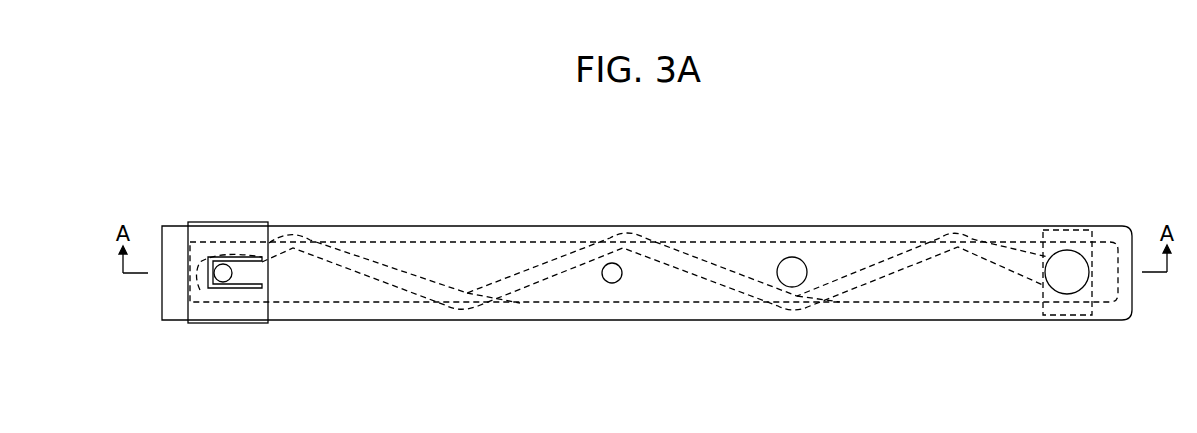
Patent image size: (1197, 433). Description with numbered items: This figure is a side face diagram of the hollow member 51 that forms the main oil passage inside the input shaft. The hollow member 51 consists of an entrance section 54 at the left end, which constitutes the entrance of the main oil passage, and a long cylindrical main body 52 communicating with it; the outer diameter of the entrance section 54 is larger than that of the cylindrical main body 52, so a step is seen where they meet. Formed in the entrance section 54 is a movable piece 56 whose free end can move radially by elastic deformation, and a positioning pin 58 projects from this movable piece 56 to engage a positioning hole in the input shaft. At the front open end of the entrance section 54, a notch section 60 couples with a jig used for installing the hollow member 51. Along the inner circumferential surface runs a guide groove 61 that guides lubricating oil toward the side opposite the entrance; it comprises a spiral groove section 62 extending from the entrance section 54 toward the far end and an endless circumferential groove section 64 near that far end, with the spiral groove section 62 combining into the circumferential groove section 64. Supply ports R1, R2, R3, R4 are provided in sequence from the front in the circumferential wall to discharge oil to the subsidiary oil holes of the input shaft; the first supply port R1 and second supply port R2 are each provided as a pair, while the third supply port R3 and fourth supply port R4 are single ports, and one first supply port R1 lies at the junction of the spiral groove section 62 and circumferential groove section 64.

The hollow member 51 is at (987, 188).
The cylindrical main body 52 is at (878, 225).
The entrance section 54 is at (230, 222).
The movable piece 56 is at (249, 264).
The positioning pin 58 is at (225, 278).
The notch section 60 is at (190, 241).
The guide groove 61 is at (512, 264).
The spiral groove section 62 is at (743, 264).
The circumferential groove section 64 is at (1067, 249).
The first supply port R1 is at (1067, 288).
The second supply port R2 is at (792, 275).
The third supply port R3 is at (612, 283).
The fourth supply port R4 is at (350, 270).